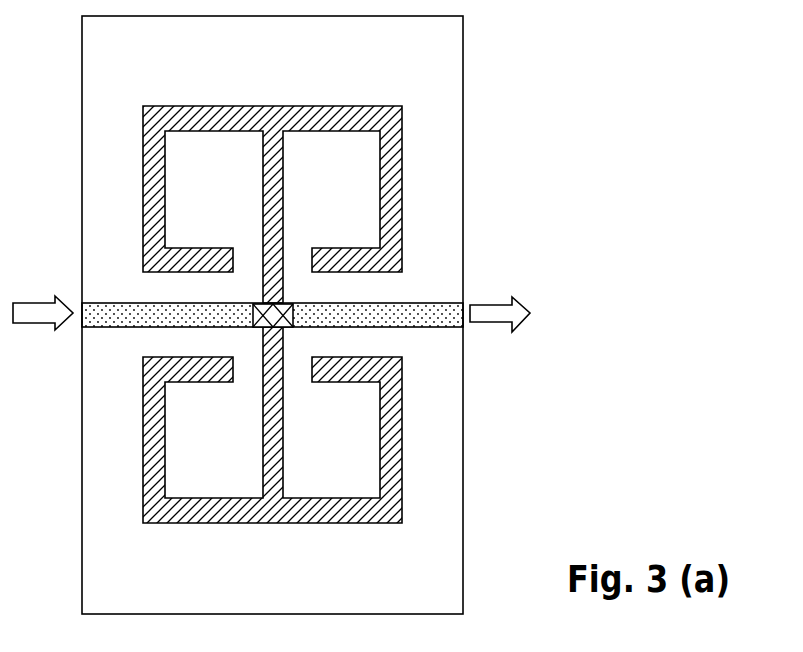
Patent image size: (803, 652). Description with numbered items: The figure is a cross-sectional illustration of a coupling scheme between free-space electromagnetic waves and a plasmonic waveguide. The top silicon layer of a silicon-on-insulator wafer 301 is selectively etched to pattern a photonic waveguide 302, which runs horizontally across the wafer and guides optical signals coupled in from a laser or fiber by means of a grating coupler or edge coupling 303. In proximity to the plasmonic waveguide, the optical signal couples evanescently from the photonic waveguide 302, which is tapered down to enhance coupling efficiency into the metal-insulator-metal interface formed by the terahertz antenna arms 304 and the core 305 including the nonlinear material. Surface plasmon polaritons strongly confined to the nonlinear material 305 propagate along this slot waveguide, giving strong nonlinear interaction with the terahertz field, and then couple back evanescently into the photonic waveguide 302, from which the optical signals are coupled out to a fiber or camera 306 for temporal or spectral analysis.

The silicon-on-insulator wafer 301 is at (92, 513).
The photonic waveguide 302 is at (446, 322).
The grating coupler or edge coupling 303 is at (45, 313).
The terahertz antenna arms 304 is at (148, 417).
The core including the nonlinear material 305 is at (277, 313).
The fiber or camera 306 is at (492, 315).